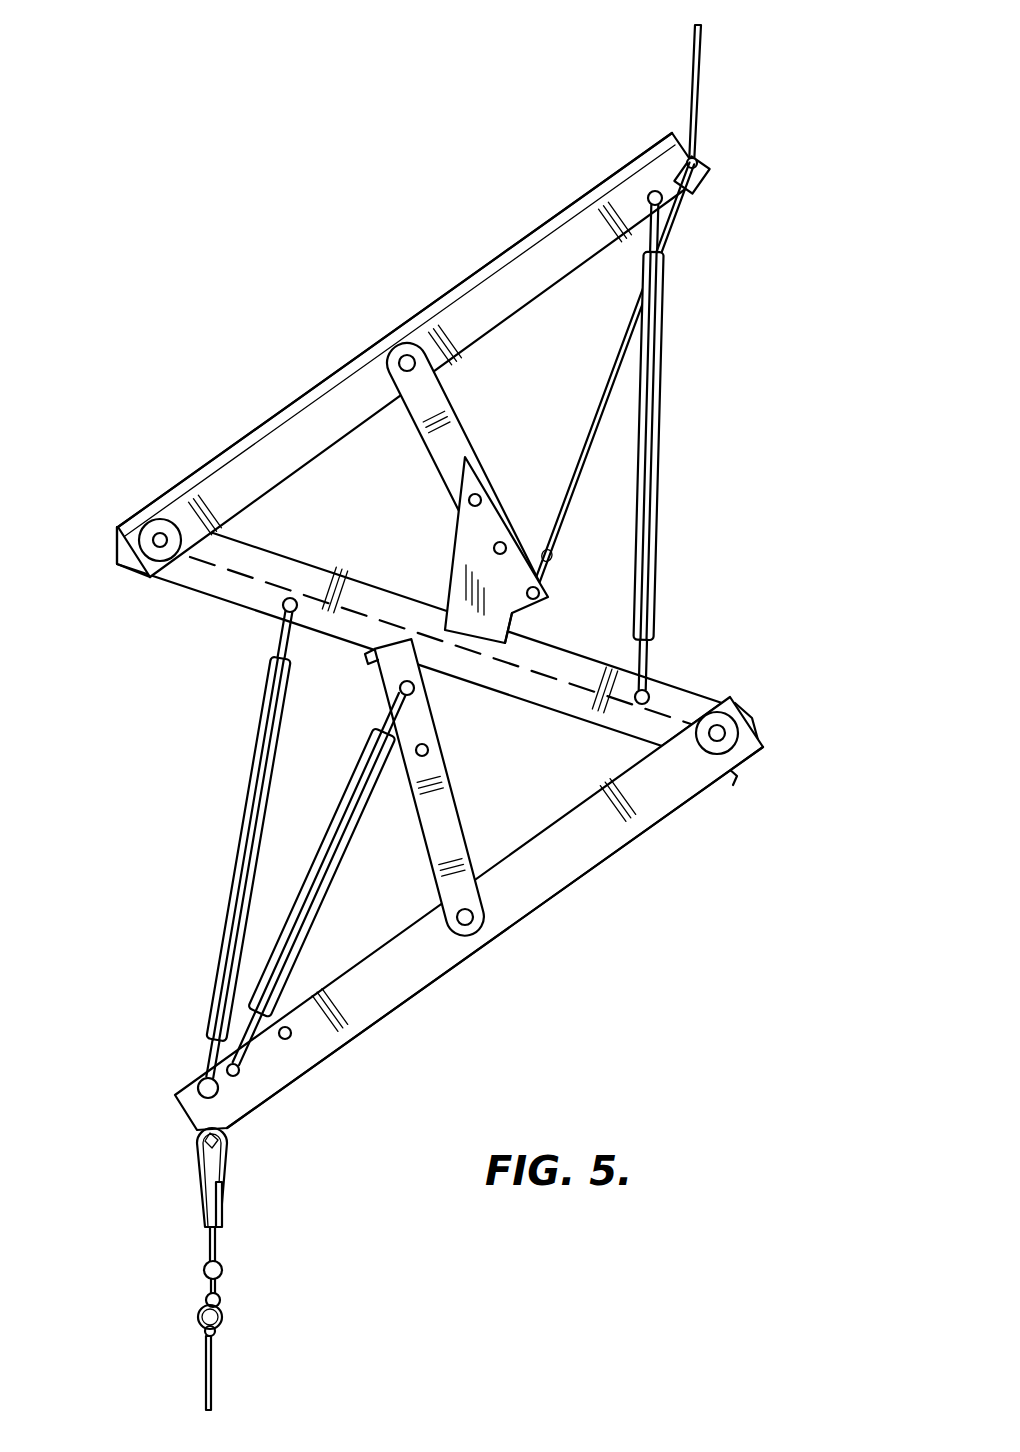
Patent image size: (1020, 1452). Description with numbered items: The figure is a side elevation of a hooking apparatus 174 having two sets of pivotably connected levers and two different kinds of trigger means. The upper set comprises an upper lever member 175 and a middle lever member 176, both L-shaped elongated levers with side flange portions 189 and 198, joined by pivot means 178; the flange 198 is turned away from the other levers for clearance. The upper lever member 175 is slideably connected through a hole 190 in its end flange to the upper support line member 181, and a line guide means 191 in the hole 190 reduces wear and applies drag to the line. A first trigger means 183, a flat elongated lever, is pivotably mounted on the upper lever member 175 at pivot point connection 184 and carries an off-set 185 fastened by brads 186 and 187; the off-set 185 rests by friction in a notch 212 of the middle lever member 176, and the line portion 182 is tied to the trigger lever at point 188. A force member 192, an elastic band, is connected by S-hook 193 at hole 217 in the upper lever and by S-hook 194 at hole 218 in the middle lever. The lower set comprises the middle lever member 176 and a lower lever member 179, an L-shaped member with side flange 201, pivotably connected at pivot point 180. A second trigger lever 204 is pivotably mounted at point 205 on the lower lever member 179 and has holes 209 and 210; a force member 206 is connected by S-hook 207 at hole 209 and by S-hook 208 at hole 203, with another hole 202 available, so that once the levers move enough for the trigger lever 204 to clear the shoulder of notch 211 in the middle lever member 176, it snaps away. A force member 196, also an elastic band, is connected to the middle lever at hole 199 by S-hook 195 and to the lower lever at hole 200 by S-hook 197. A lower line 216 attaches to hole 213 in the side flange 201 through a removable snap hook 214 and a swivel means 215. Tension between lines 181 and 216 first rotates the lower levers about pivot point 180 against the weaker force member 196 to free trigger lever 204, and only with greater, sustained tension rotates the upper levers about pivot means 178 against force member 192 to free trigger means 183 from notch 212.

The pallet frame assembly 174 is at (256, 257).
The upper lever member 175 is at (532, 272).
The middle lever member 176 is at (230, 578).
The pivot means 178 is at (117, 562).
The lower lever member 179 is at (560, 860).
The pivot point 180 is at (726, 733).
The upper support line member 181 is at (690, 60).
The upper support line portion 182 is at (606, 388).
The upper trigger means 183 is at (447, 450).
The pivot point connection 184 is at (418, 363).
The extension or off-set 185 is at (452, 540).
The brad 186 is at (483, 496).
The brad 187 is at (505, 544).
The line attachment point 188 is at (540, 590).
The side flange portion 189 is at (300, 400).
The hole 190 is at (697, 190).
The line guide means 191 is at (700, 163).
The force member 192 is at (672, 400).
The S-hook 193 is at (640, 252).
The S-hook 194 is at (645, 665).
The S-hook 195 is at (278, 638).
The force member 196 is at (232, 830).
The S-hook 197 is at (210, 1047).
The side flange portion 198 is at (180, 580).
The hole 199 is at (292, 597).
The hole 200 is at (197, 1086).
The side flange 201 is at (690, 805).
The hole 202 is at (290, 1040).
The hole 203 is at (243, 1075).
The trigger lever 204 is at (445, 782).
The pivot point 205 is at (474, 900).
The force member 206 is at (330, 893).
The S-hook 207 is at (385, 728).
The S-hook 208 is at (295, 1000).
The hole 209 is at (412, 696).
The hole 210 is at (430, 750).
The notch 211 is at (372, 656).
The notch 212 is at (510, 641).
The hole 213 is at (230, 1134).
The removable hook 214 is at (225, 1195).
The swivel means 215 is at (223, 1270).
The lower line 216 is at (213, 1372).
The hole 217 is at (650, 190).
The hole 218 is at (650, 695).